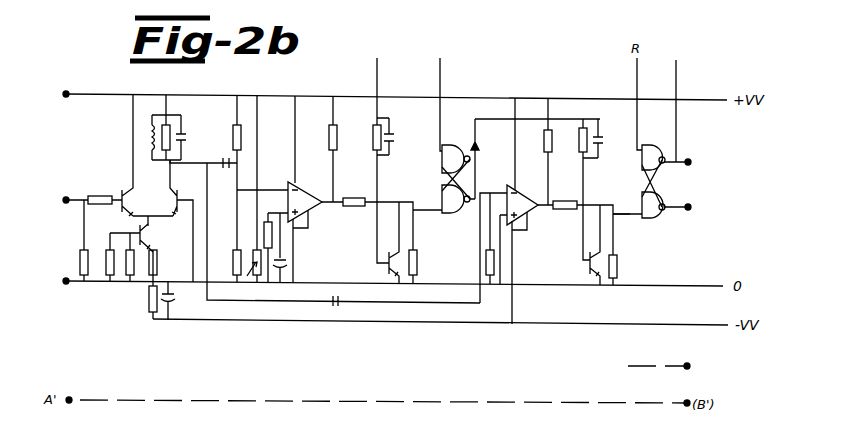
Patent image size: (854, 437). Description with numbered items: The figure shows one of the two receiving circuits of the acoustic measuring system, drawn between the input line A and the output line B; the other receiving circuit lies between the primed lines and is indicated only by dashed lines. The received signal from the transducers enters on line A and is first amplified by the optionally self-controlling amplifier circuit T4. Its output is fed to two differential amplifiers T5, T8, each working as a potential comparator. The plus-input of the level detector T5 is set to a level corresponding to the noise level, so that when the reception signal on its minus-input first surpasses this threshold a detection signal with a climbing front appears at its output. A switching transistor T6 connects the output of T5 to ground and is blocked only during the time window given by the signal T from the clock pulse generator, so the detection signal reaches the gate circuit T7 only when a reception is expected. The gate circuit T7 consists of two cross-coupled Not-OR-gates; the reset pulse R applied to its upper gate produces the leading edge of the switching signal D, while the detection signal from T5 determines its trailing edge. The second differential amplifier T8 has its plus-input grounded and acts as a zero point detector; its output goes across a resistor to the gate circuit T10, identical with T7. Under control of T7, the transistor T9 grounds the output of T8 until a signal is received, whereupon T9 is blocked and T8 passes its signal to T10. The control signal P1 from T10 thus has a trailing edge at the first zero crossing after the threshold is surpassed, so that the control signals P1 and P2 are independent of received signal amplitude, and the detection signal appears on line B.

The amplifier circuit T4 is at (157, 188).
The differential amplifier T5 is at (293, 225).
The switching transistor T6 is at (382, 242).
The gate circuit T7 is at (454, 193).
The second differential amplifier T8 is at (509, 247).
The transistor T9 is at (579, 245).
The gate circuit T10 is at (650, 195).
The line A is at (80, 201).
The signal T is at (383, 151).
The reset pulse R is at (440, 96).
The switching signal D is at (480, 159).
The line B is at (621, 208).
The control signal P1 is at (712, 200).
The control signal P2 is at (711, 366).